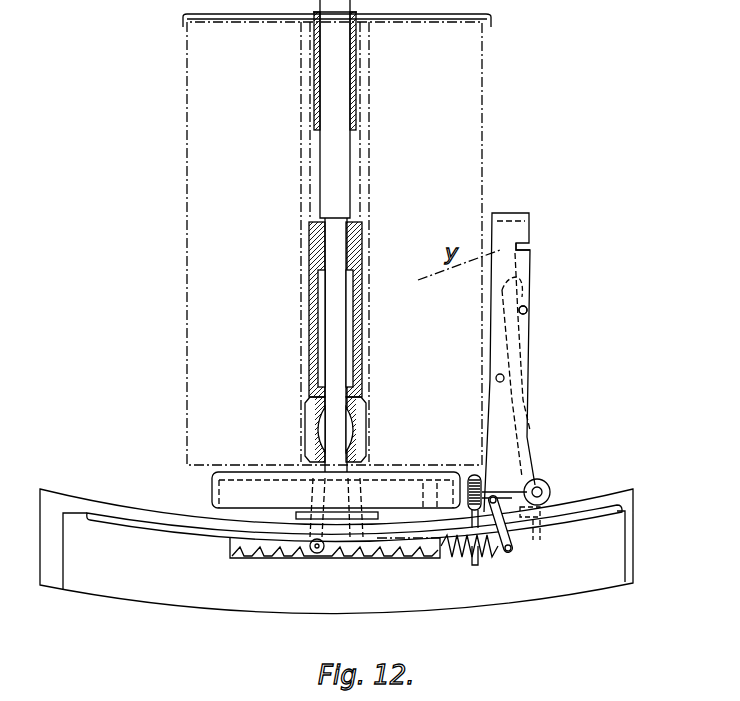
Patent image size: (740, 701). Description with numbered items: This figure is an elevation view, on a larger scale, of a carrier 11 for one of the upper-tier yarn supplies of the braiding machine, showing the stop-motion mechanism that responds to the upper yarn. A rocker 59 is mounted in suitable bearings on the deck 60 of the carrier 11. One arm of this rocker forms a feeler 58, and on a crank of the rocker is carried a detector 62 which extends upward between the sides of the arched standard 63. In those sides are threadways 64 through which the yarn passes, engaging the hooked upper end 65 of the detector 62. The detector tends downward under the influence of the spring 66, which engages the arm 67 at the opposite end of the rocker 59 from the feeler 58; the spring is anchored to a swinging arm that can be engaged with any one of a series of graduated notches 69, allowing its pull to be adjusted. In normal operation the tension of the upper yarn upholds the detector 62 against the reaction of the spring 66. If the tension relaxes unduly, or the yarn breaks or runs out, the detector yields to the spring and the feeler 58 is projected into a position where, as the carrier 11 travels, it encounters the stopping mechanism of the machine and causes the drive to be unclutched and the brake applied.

The carrier 11 is at (573, 593).
The feeler 58 is at (545, 530).
The rocker 59 is at (512, 490).
The deck 60 is at (573, 505).
The detector 62 is at (517, 380).
The arched standard 63 is at (530, 350).
The threadways 64 is at (520, 249).
The hooked upper end 65 is at (527, 297).
The spring 66 is at (463, 558).
The arm 67 is at (527, 550).
The graduated notches 69 is at (275, 555).